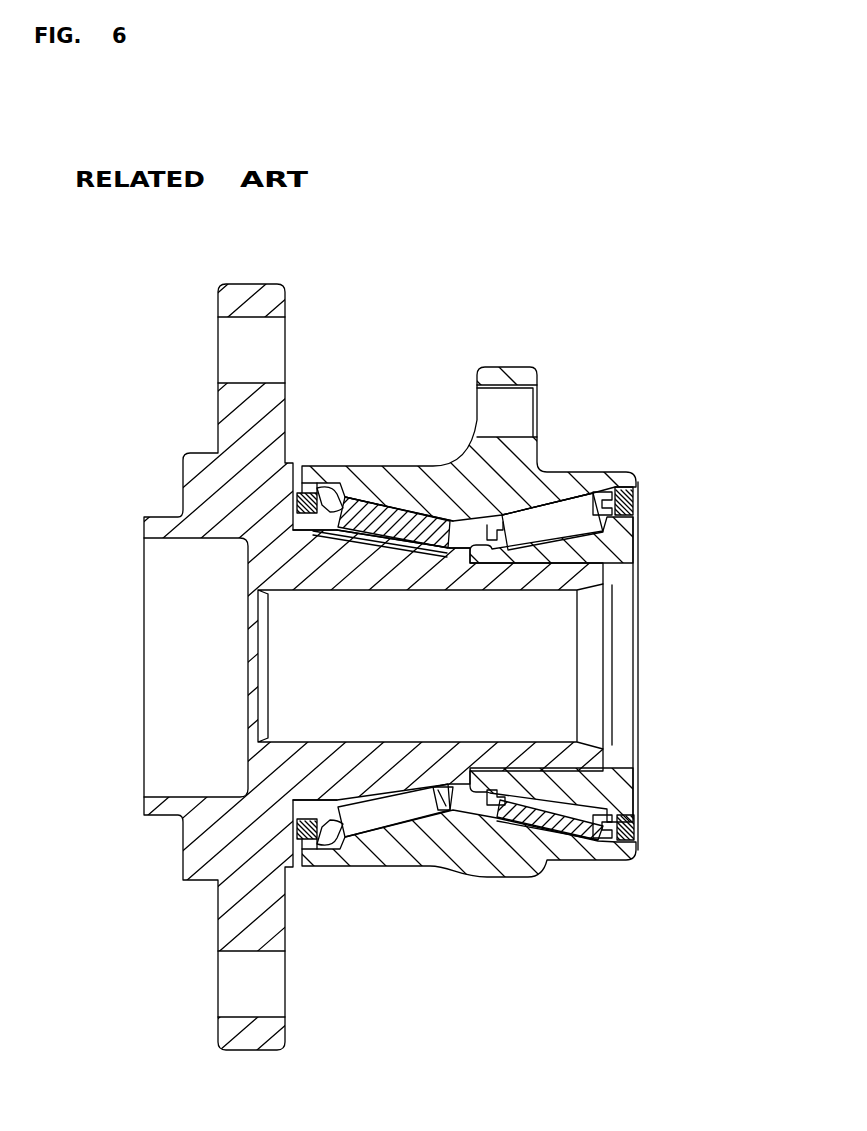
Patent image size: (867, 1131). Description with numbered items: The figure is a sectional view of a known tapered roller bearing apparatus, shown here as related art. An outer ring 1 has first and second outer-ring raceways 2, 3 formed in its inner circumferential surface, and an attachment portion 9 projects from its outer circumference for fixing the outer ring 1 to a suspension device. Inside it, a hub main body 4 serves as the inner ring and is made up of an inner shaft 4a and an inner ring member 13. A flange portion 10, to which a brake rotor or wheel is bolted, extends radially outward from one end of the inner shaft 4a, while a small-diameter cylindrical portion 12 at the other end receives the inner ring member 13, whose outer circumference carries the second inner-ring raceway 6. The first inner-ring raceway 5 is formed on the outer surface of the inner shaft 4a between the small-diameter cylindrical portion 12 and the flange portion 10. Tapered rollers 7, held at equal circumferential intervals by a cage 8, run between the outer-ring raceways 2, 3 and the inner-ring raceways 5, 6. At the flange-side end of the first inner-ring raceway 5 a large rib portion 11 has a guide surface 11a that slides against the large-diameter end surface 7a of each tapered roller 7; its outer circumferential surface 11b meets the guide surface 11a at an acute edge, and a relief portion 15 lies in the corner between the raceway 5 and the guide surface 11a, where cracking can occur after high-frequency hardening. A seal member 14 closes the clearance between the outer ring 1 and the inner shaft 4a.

The outer ring 1 is at (552, 452).
The first outer-ring raceway 2 is at (398, 550).
The second outer-ring raceway 3 is at (527, 512).
The hub main body 4 is at (183, 841).
The inner shaft 4a is at (310, 583).
The first inner-ring raceway 5 is at (352, 575).
The second inner-ring raceway 6 is at (600, 528).
The tapered rollers 7 is at (378, 522).
The large-diameter end surface 7a is at (343, 527).
The cage 8 is at (393, 542).
The attachment portion 9 is at (518, 367).
The flange portion 10 is at (247, 296).
The large rib portion 11 is at (333, 507).
The guide surface 11a is at (330, 540).
The outer circumferential surface 11b is at (299, 490).
The small-diameter cylindrical portion 12 is at (580, 560).
The inner ring member 13 is at (620, 784).
The seal member 14 is at (293, 498).
The relief portion 15 is at (318, 528).